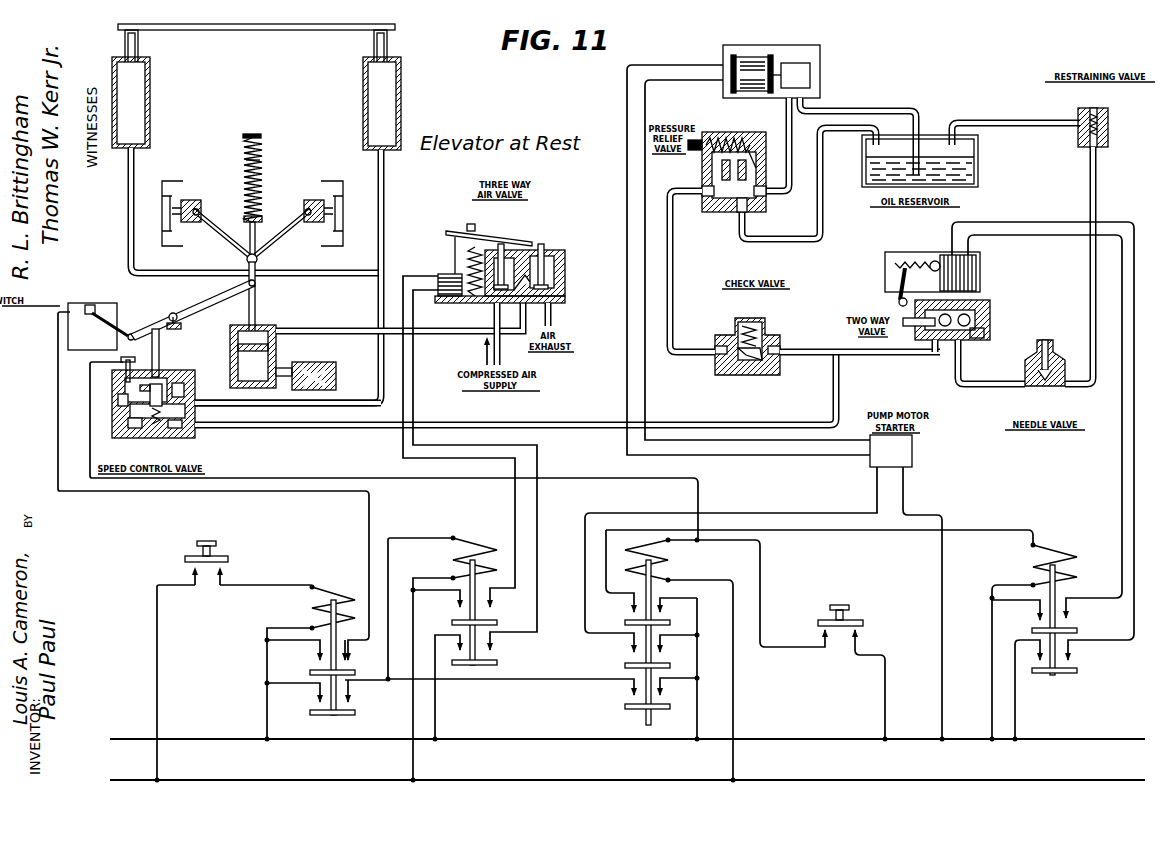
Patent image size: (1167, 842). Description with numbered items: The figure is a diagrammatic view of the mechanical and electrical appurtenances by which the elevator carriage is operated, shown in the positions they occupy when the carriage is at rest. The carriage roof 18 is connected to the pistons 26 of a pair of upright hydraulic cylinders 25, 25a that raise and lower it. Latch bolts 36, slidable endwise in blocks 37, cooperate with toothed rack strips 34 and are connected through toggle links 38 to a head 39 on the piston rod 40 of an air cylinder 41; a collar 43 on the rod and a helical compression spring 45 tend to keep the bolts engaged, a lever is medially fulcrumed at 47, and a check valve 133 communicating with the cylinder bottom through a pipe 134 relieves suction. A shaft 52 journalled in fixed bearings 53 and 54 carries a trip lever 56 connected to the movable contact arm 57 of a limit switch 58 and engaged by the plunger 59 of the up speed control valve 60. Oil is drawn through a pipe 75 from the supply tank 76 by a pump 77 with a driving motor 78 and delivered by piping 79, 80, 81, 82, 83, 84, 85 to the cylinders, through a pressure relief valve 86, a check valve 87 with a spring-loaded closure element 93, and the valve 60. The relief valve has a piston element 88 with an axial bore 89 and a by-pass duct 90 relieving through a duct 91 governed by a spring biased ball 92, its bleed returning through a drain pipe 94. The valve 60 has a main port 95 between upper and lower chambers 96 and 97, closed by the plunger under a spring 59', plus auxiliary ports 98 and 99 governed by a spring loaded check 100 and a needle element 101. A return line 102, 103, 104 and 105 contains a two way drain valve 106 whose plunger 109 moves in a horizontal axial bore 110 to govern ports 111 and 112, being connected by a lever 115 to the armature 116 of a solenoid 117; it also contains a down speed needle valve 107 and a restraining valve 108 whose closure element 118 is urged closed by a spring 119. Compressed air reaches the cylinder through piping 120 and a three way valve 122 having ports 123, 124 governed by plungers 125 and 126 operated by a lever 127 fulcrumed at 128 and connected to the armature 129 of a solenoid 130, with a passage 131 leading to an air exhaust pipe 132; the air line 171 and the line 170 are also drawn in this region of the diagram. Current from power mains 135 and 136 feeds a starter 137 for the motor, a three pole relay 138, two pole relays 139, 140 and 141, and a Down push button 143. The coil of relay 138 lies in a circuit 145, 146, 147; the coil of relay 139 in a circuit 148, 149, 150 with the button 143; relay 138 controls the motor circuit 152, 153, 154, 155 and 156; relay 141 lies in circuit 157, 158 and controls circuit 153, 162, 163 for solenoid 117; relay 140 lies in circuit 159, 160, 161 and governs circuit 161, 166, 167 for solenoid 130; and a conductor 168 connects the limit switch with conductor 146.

The top or roof 18 is at (252, 30).
The pistons 26 is at (138, 44).
The hydraulic cylinder 25 is at (150, 112).
The hydraulic cylinder 25a is at (363, 112).
The piping 84 is at (127, 212).
The piping 85 is at (385, 198).
The collar 43 is at (250, 134).
The helical compression spring 45 is at (263, 168).
The fulcrum 47 is at (263, 217).
The latch bolts 36 is at (170, 182).
The blocks 37 is at (191, 200).
The toothed rack strips 34 is at (163, 216).
The toggle links 38 is at (222, 230).
The head 39 is at (258, 260).
The piston rod 40 is at (256, 302).
The air cylinder 41 is at (253, 356).
The pipe 134 is at (283, 367).
The check valve 133 is at (337, 364).
The limit switch 58 is at (95, 302).
The movable contact arm 57 is at (130, 333).
The trip lever 56 is at (163, 313).
The shaft 52 is at (174, 312).
The fixed bearing 53 is at (225, 286).
The fixed bearing 54 is at (182, 325).
The plunger 59 is at (169, 353).
The control valve 60 is at (188, 373).
The needle element 101 is at (120, 359).
The upper chamber 96 is at (160, 374).
The check 100 is at (196, 386).
The auxiliary port 99 is at (112, 411).
The auxiliary port 98 is at (197, 414).
The main port 95 is at (132, 438).
The spring 59' is at (151, 448).
The lower chamber 97 is at (182, 438).
The piping 83 is at (278, 424).
The piping 82 is at (553, 421).
The air pipe 171 is at (448, 337).
The wire 170 is at (175, 492).
The port 124 is at (566, 262).
The port 123 is at (488, 301).
The piping 120 is at (488, 320).
The plunger 125 is at (500, 244).
The fulcrum 128 is at (540, 244).
The plunger 126 is at (538, 248).
The lever 127 is at (468, 224).
The armature 129 is at (445, 248).
The solenoid 130 is at (438, 268).
The three way valve 122 is at (564, 254).
The passage 131 is at (566, 282).
The air exhaust pipe 132 is at (552, 322).
The circuit conductor 166 is at (514, 496).
The circuit conductor 167 is at (538, 548).
The electric driving motor 78 is at (750, 57).
The pump 77 is at (810, 70).
The circuit conductor 154 is at (626, 97).
The circuit conductor 155 is at (646, 97).
The piping 79 is at (792, 165).
The pipe 75 is at (876, 110).
The oil return pipe line 105 is at (1005, 122).
The drain pipe 94 is at (824, 213).
The by-pass duct 90 is at (703, 168).
The spring biased ball 92 is at (744, 138).
The pressure relief valve 86 is at (710, 138).
The duct 91 is at (760, 144).
The axial bore 89 is at (703, 209).
The piston element 88 is at (766, 209).
The supply tank 76 is at (978, 164).
The restraining valve 108 is at (1080, 104).
The spring 119 is at (1108, 118).
The closure element 118 is at (1108, 148).
The oil return pipe line 104 is at (1088, 300).
The check valve 87 is at (762, 312).
The closure element 93 is at (746, 376).
The piping 80 is at (673, 278).
The pipe branch 81 is at (830, 348).
The armature 116 is at (935, 253).
The solenoid 117 is at (977, 262).
The lever 115 is at (895, 299).
The two way drain valve 106 is at (990, 323).
The port 111 is at (905, 327).
The plunger 109 is at (978, 299).
The horizontal axial bore 110 is at (990, 312).
The port 112 is at (978, 340).
The oil return pipe line 102 is at (926, 358).
The oil return pipe line 103 is at (990, 388).
The down speed needle valve 107 is at (1032, 398).
The circuit conductor 163 is at (1030, 221).
The circuit conductor 162 is at (1045, 236).
The starter 137 is at (912, 448).
The conductor 168 is at (348, 477).
The circuit conductor 153 is at (785, 512).
The circuit conductor 152 is at (584, 598).
The circuit conductor 157 is at (614, 556).
The circuit conductor 146 is at (762, 578).
The circuit conductor 147 is at (735, 683).
The circuit conductor 145 is at (884, 693).
The circuit conductor 159 is at (557, 680).
The circuit conductor 160 is at (417, 537).
The circuit conductor 161 is at (412, 705).
The circuit conductor 150 is at (158, 672).
The circuit conductor 149 is at (262, 586).
The Down push button 143 is at (184, 556).
The circuit conductor 148 is at (265, 712).
The two pole relay 139 is at (352, 585).
The two pole relay 140 is at (470, 524).
The three pole relay 138 is at (664, 724).
The two pole relay 141 is at (1050, 540).
The circuit conductor 158 is at (990, 676).
The circuit conductor 156 is at (944, 572).
The power main 135 is at (303, 740).
The power main 136 is at (303, 781).